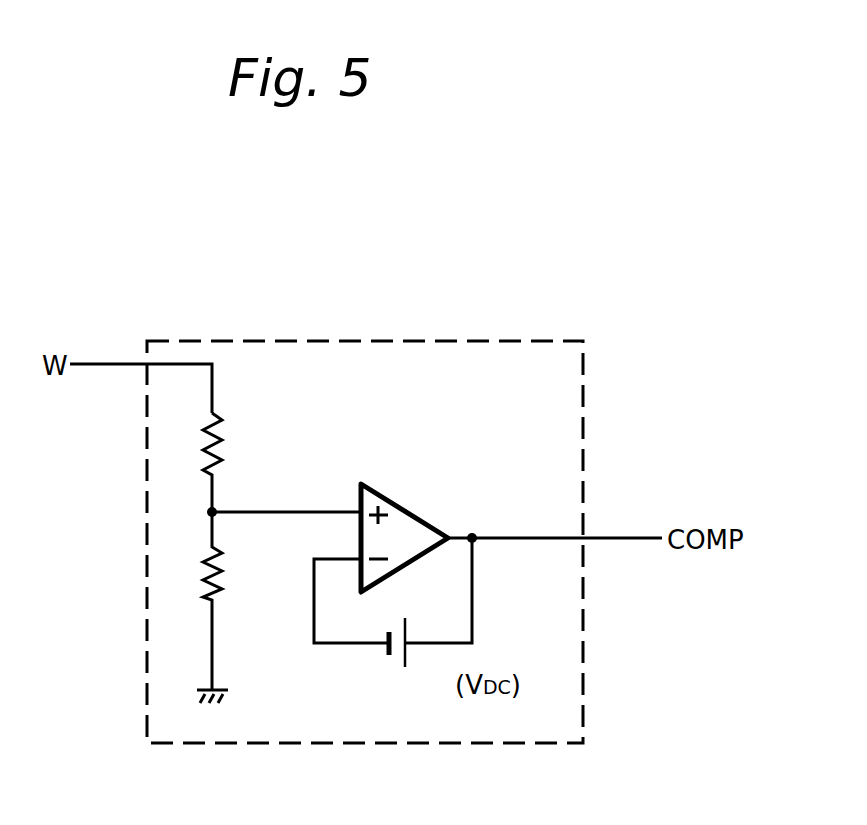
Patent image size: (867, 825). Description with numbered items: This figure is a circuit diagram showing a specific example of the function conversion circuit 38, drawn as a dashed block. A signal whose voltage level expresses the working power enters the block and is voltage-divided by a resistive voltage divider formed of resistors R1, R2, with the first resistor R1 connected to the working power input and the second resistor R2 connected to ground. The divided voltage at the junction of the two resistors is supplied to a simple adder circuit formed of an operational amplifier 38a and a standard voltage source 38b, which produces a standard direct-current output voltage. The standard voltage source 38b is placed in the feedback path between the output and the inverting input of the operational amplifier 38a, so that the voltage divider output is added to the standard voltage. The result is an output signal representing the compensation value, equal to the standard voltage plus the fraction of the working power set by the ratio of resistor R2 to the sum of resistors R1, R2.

The function conversion circuit 38 is at (583, 341).
The operational amplifier 38a is at (407, 508).
The standard voltage source 38b is at (389, 650).
The resistor R1 is at (235, 462).
The resistor R2 is at (235, 601).